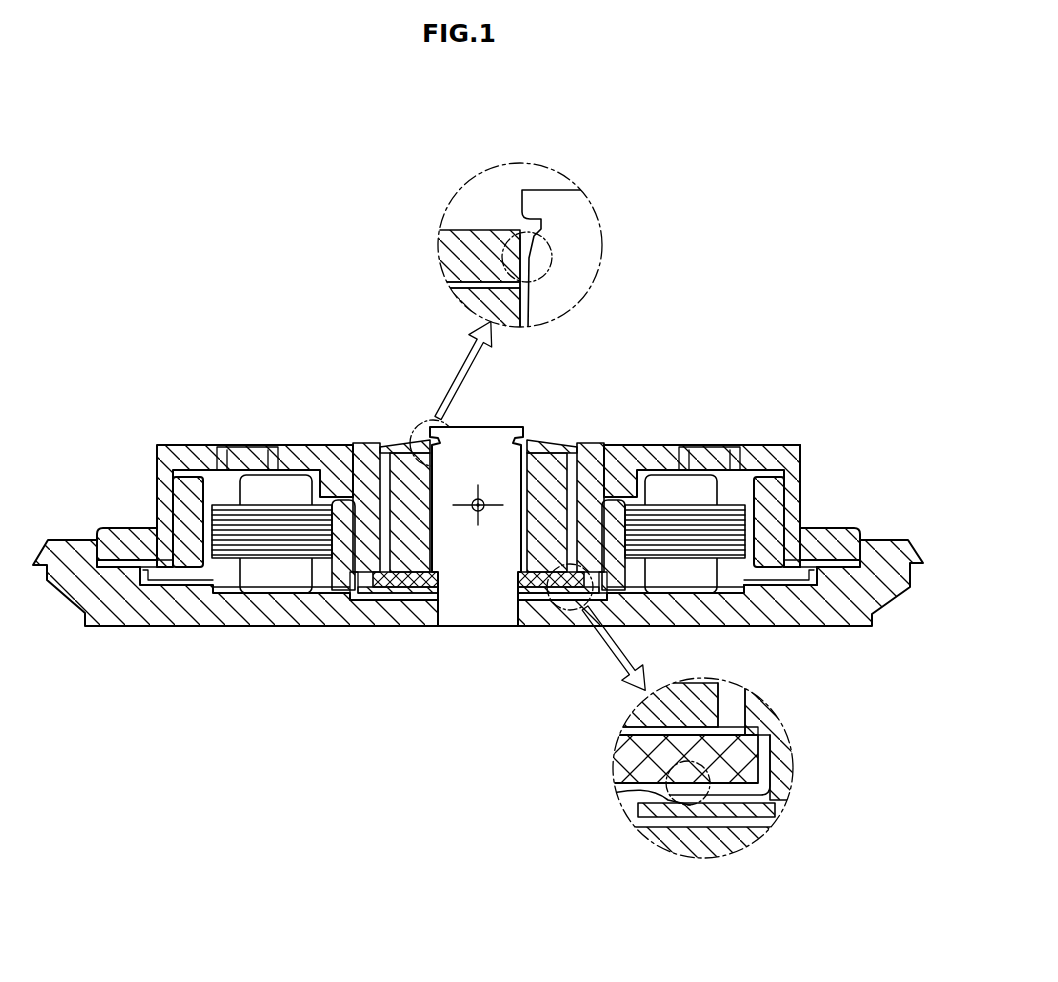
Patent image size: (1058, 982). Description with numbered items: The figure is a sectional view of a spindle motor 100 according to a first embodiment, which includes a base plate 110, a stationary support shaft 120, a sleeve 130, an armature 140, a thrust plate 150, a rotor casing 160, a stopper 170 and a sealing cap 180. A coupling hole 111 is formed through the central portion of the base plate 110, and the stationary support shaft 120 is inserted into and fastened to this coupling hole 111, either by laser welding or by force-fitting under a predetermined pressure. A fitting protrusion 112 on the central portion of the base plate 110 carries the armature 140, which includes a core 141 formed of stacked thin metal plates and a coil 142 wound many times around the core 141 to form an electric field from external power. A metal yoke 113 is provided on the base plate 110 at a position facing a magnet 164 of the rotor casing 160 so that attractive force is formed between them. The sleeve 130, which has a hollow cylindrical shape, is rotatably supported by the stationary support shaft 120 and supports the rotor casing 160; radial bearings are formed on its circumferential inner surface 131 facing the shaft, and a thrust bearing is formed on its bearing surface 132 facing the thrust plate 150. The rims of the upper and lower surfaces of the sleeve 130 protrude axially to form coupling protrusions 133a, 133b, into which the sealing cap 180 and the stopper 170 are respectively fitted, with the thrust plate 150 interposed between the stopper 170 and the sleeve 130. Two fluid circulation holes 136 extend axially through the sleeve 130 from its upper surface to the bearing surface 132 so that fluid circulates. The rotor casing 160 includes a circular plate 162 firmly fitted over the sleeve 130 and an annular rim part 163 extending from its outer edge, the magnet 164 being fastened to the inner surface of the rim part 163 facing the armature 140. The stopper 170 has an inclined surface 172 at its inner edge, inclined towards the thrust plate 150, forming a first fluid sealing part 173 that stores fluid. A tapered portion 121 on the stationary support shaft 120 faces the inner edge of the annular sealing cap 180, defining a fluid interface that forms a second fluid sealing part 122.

The spindle motor 100 is at (179, 285).
The base plate 110 is at (130, 634).
The coupling hole 111 is at (536, 600).
The fitting protrusion 112 is at (335, 580).
The yoke 113 is at (812, 605).
The stationary support shaft 120 is at (477, 605).
The tapered portion 121 is at (534, 236).
The second fluid sealing part 122 is at (514, 233).
The sleeve 130 is at (442, 508).
The circumferential inner surface 131 is at (572, 465).
The bearing surface 132 is at (748, 713).
The upper coupling protrusion 133a is at (363, 456).
The lower coupling protrusion 133b is at (345, 574).
The fluid circulation hole 136 is at (397, 440).
The armature 140 is at (456, 601).
The core 141 is at (228, 545).
The coil 142 is at (278, 578).
The thrust plate 150 is at (416, 590).
The rotor casing 160 is at (478, 434).
The circular plate 162 is at (662, 452).
The rim part 163 is at (800, 497).
The magnet 164 is at (745, 475).
The stopper 170 is at (744, 800).
The inclined surface 172 is at (680, 803).
The first fluid sealing part 173 is at (687, 807).
The sealing cap 180 is at (541, 436).